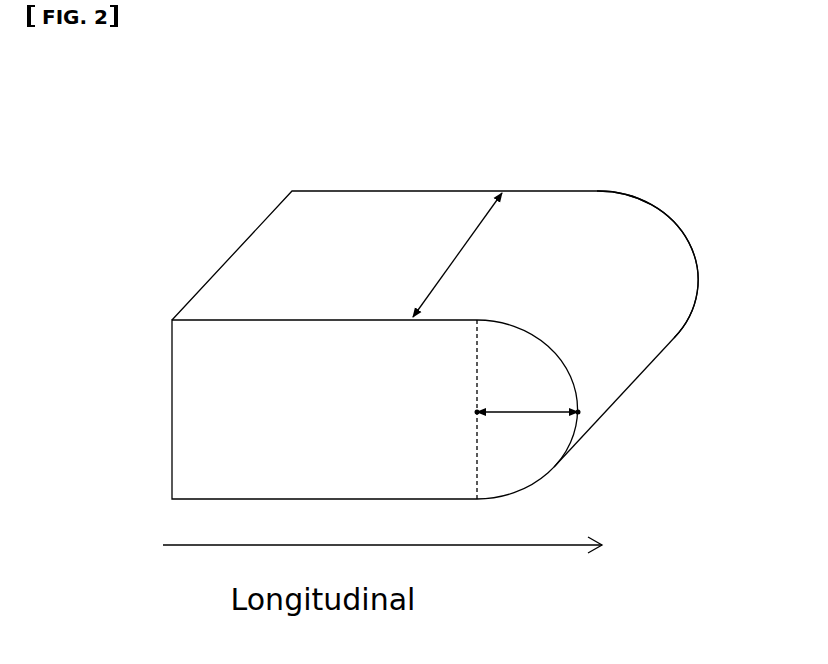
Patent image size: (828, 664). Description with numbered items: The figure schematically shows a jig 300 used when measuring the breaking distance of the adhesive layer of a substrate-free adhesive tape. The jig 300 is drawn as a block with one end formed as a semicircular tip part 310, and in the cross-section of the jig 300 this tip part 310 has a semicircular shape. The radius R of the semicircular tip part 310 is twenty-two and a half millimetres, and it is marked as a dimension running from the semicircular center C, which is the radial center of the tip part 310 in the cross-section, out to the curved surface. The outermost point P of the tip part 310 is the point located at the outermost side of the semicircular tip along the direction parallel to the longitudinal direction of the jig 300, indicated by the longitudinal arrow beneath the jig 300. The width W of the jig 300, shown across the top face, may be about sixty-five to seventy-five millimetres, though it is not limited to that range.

The jig 300 is at (433, 155).
The semicircular tip part 310 is at (658, 233).
The width of the jig W is at (457, 255).
The radius of the semicircular tip part R is at (527, 400).
The semicircular center of the tip part C is at (470, 412).
The outermost point of the tip part P is at (588, 420).